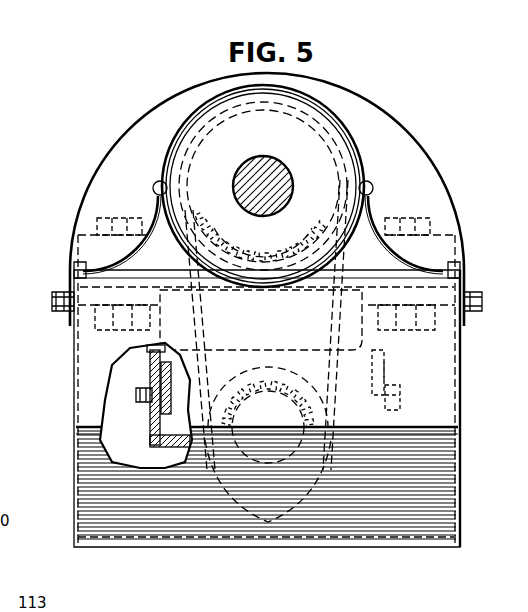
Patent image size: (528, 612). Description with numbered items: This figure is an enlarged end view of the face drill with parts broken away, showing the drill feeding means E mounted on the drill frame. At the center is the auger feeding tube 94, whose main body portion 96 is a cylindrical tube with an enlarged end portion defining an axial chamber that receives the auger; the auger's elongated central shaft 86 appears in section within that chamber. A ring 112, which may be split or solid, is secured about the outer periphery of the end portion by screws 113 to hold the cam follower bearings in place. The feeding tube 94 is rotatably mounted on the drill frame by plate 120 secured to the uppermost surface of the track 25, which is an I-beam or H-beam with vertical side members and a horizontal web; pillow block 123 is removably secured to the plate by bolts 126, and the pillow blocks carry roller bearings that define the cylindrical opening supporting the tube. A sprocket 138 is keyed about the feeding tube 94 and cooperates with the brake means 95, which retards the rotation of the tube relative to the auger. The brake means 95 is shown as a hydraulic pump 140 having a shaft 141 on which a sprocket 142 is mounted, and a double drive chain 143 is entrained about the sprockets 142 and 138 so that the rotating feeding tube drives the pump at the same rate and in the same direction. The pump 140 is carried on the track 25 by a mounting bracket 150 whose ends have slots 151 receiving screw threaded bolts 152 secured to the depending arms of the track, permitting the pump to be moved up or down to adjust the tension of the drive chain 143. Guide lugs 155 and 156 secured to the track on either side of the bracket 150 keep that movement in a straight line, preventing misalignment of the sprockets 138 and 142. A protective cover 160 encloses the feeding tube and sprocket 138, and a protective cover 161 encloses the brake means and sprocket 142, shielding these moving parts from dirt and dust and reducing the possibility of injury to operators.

The drill feeding means E is at (378, 94).
The track 25 is at (275, 342).
The central shaft 86 is at (248, 170).
The auger feeding tube 94 is at (150, 146).
The brake means 95 is at (397, 371).
The main body portion 96 is at (340, 148).
The ring 112 is at (357, 162).
The screws 113 is at (153, 187).
The plate 120 is at (408, 281).
The pillow block 123 is at (74, 241).
The bolts 126 is at (108, 215).
The sprocket 138 is at (285, 241).
The hydraulic pump 140 is at (318, 470).
The shaft 141 is at (286, 420).
The sprocket 142 is at (280, 385).
The double drive chain 143 is at (187, 263).
The mounting bracket 150 is at (160, 440).
The slots 151 is at (152, 385).
The screw threaded bolts 152 is at (140, 400).
The guide lug 155 is at (142, 349).
The guide lug 156 is at (378, 352).
The protective cover 160 is at (432, 168).
The protective cover 161 is at (452, 416).